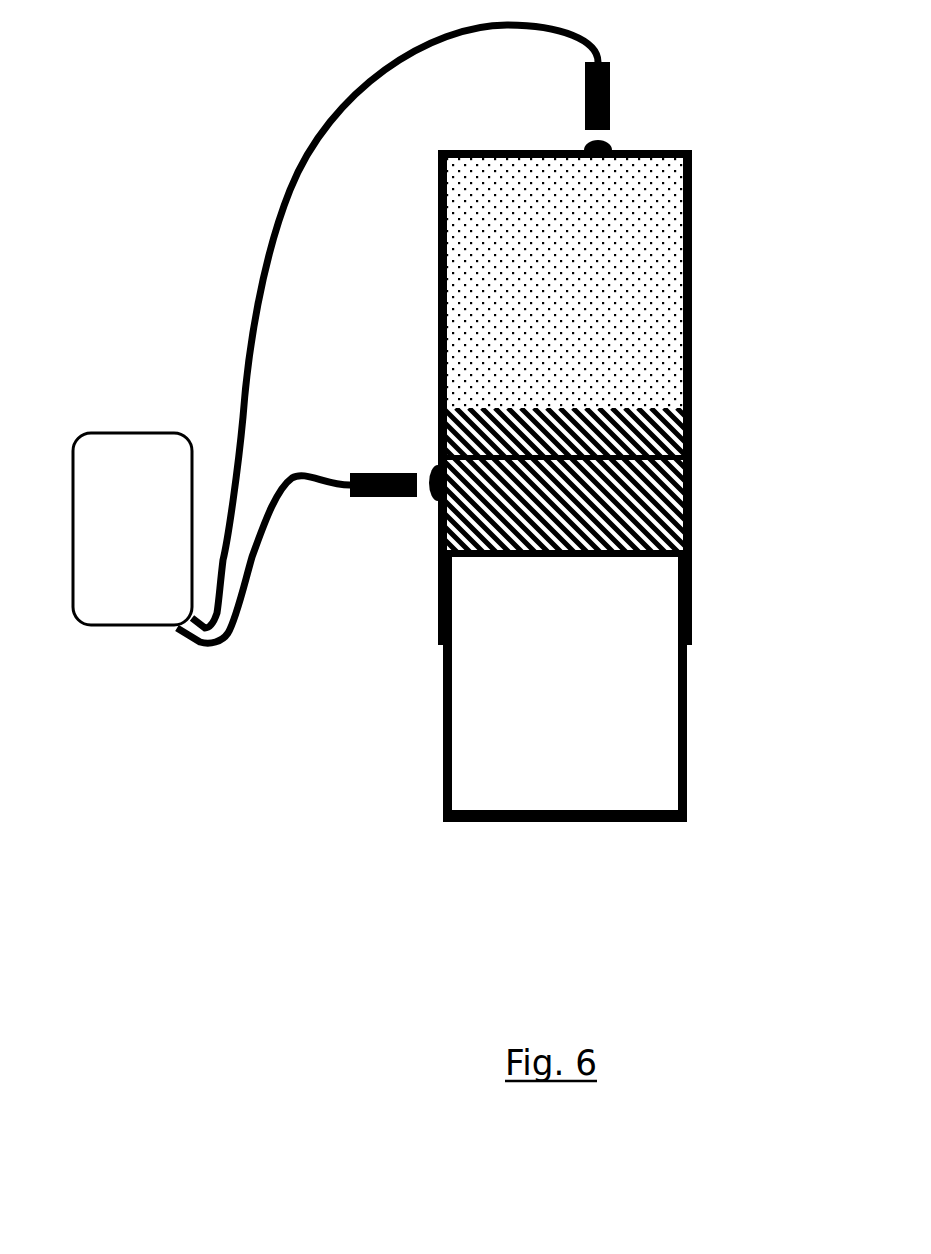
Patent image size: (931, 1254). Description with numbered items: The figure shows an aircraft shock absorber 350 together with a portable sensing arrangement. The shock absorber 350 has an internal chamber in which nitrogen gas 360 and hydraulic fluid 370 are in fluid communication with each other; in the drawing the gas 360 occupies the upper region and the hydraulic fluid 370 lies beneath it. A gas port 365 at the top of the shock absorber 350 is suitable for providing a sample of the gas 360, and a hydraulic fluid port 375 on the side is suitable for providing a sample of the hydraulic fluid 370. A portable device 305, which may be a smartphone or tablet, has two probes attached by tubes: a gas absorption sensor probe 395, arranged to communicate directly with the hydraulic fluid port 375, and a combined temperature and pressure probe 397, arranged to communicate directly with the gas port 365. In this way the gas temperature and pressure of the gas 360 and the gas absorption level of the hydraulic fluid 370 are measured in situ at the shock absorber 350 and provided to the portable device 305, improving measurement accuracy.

The portable device 305 is at (163, 551).
The aircraft shock absorber 350 is at (397, 733).
The nitrogen gas 360 is at (597, 335).
The gas port 365 is at (580, 140).
The hydraulic fluid 370 is at (594, 540).
The hydraulic fluid port 375 is at (428, 460).
The gas absorption sensor probe 395 is at (377, 503).
The combined temperature and pressure probe 397 is at (618, 88).